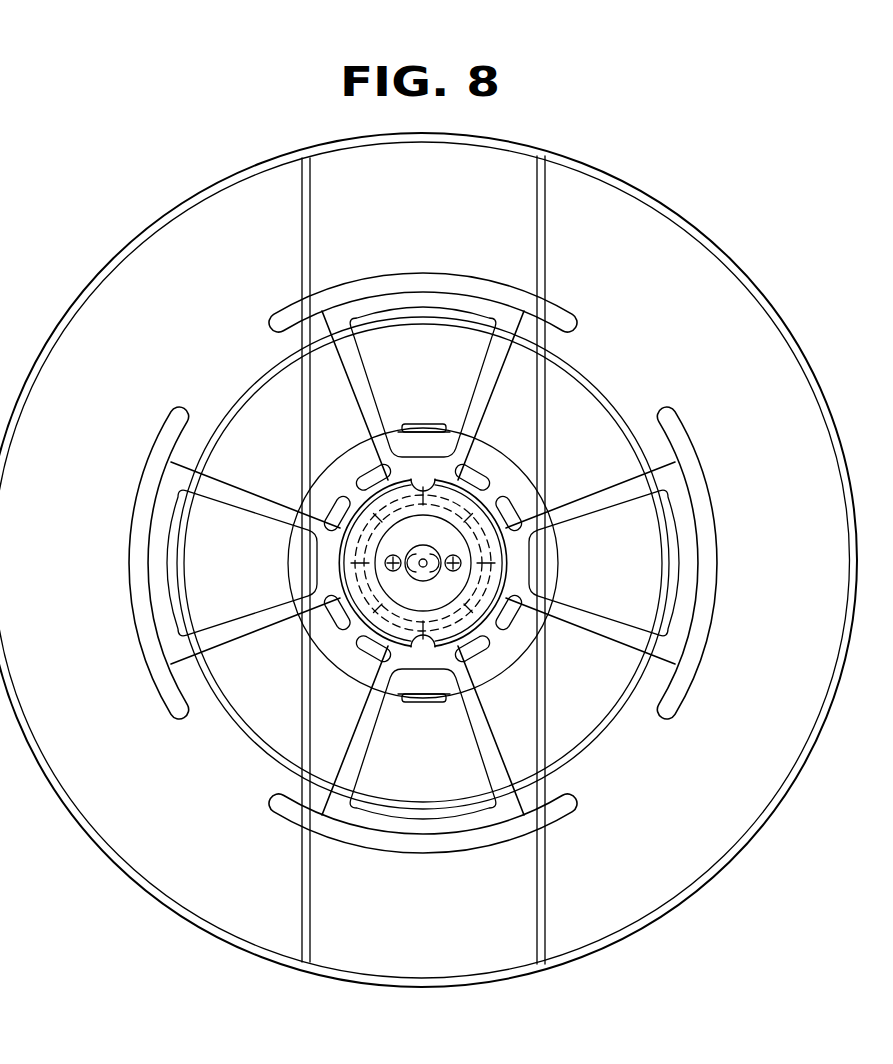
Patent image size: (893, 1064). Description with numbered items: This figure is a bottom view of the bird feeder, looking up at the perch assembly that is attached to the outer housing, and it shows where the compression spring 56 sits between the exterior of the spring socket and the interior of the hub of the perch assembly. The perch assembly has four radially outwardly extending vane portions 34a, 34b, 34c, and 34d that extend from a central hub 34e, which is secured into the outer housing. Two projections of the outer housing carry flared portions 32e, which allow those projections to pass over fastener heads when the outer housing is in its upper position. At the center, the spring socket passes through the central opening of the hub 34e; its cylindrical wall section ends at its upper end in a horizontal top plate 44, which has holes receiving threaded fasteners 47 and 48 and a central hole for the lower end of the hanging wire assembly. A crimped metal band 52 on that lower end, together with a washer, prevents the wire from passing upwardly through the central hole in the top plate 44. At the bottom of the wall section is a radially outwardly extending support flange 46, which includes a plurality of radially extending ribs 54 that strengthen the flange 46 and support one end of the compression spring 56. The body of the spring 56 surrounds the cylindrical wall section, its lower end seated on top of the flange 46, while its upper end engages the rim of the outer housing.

The vane portion 34a is at (426, 272).
The vane portion 34b is at (130, 561).
The vane portion 34c is at (430, 855).
The vane portion 34d is at (712, 559).
The central hub 34e is at (458, 575).
The flared portion 32e is at (422, 424).
The threaded fastener 47 is at (390, 556).
The radially extending rib 54 is at (505, 443).
The support flange 46 is at (465, 482).
The compression spring 56 is at (510, 568).
The threaded fastener 48 is at (520, 602).
The top plate 44 is at (437, 588).
The crimped metal band 52 is at (418, 576).